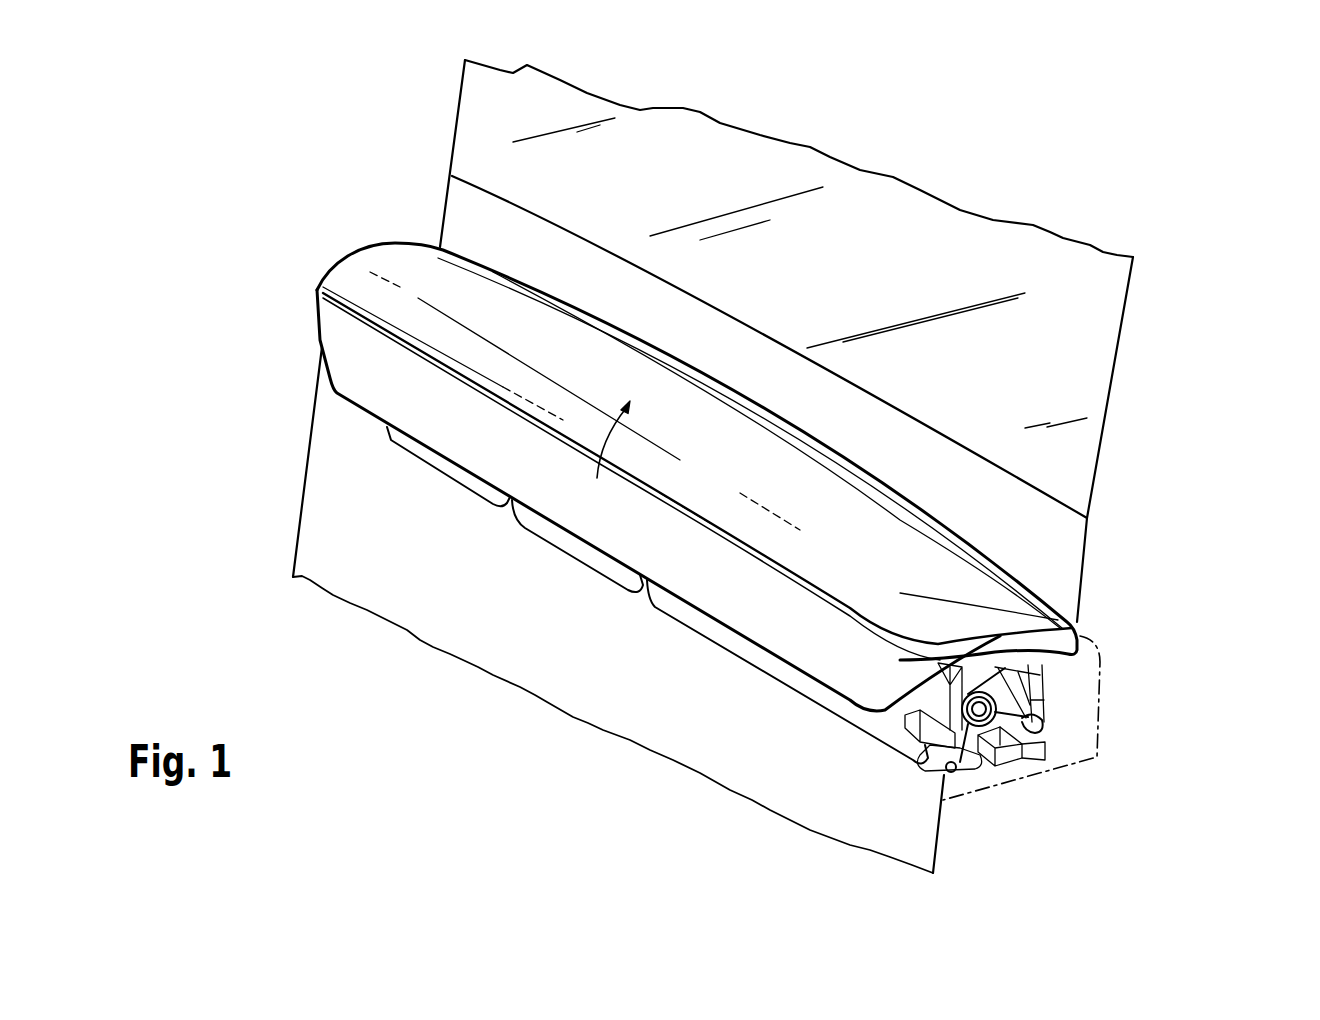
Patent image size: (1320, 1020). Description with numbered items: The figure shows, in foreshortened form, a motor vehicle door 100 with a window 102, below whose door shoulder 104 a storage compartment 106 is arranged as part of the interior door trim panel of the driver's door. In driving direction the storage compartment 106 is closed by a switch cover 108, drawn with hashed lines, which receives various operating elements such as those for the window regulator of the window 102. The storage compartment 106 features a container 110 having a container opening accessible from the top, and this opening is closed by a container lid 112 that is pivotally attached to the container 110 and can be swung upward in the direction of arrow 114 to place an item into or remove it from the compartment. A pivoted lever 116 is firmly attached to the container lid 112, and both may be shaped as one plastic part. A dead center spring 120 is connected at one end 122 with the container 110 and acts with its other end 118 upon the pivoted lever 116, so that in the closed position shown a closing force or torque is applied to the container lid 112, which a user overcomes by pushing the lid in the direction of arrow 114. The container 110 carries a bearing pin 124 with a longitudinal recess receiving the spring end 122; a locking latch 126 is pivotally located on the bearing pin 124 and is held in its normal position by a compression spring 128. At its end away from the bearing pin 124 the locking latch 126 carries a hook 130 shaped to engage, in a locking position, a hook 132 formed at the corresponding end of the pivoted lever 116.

The motor vehicle door 100 is at (1148, 443).
The window 102 is at (1005, 252).
The door shoulder 104 is at (738, 320).
The storage compartment 106 is at (365, 242).
The switch cover 108 is at (1100, 650).
The container 110 is at (683, 612).
The container lid 112 is at (768, 452).
The arrow 114 is at (603, 436).
The pivoted lever 116 is at (1017, 676).
The end of dead center spring 118 is at (1045, 723).
The dead center spring 120 is at (953, 696).
The end of dead center spring 122 is at (957, 772).
The bearing pin 124 is at (950, 777).
The locking latch 126 is at (997, 770).
The compression spring 128 is at (963, 780).
The hook 130 is at (1000, 763).
The hook 132 is at (1030, 748).